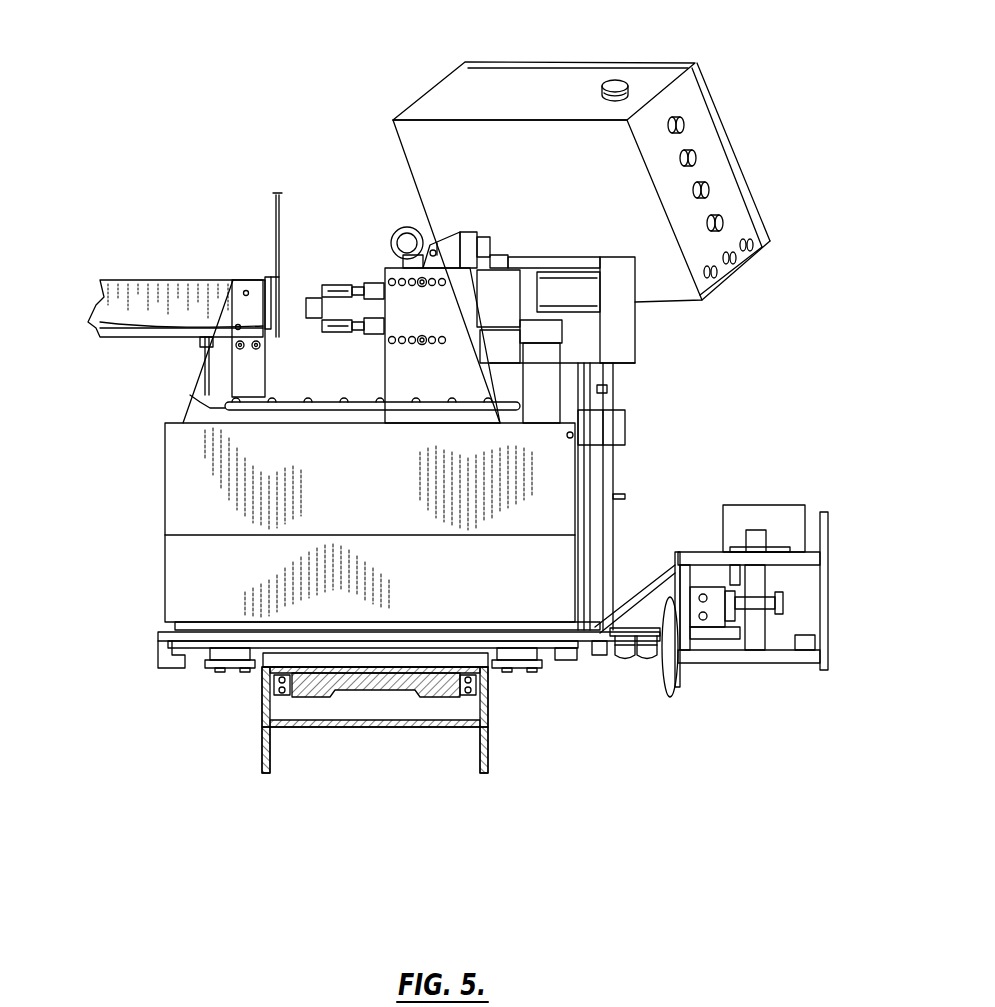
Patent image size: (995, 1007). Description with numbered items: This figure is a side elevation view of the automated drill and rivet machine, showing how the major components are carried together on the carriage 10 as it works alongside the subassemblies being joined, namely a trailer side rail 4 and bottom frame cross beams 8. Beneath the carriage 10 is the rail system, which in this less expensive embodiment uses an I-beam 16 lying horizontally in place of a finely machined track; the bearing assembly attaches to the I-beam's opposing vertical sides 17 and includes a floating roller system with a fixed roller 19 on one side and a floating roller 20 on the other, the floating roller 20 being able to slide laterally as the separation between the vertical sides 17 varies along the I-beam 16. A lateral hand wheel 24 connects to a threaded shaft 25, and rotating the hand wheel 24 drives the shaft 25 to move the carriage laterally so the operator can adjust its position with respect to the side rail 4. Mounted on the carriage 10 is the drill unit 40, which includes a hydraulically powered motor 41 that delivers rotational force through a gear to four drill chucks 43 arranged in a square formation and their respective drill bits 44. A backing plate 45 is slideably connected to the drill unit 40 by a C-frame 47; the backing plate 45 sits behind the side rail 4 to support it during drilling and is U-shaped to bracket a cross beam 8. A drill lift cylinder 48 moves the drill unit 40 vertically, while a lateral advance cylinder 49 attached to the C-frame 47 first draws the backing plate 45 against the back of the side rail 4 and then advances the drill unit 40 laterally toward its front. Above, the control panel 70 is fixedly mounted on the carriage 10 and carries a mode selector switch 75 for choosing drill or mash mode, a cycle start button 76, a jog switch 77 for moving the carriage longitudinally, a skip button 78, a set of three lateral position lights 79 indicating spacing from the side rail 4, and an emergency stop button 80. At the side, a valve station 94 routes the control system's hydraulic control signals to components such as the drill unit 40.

The trailer side rail 4 is at (268, 327).
The bottom frame cross beams 8 is at (125, 282).
The carriage 10 is at (128, 573).
The I-beam 16 is at (398, 730).
The opposing vertical sides 17 is at (266, 737).
The fixed roller 19 is at (273, 687).
The floating roller 20 is at (478, 687).
The lateral hand wheel 24 is at (672, 697).
The threaded shaft 25 is at (592, 656).
The drill unit 40 is at (406, 282).
The motor 41 is at (574, 302).
The drill chucks 43 is at (378, 266).
The drill bits 44 is at (342, 266).
The backing plate 45 is at (270, 288).
The C-frame 47 is at (292, 400).
The drill lift cylinder 48 is at (545, 383).
The lateral advance cylinder 49 is at (618, 438).
The control panel 70 is at (474, 93).
The mode selector switch 75 is at (688, 120).
The cycle start button 76 is at (698, 152).
The jog switch 77 is at (712, 185).
The skip button 78 is at (724, 222).
The lateral position lights 79 is at (730, 263).
The emergency stop button 80 is at (624, 78).
The valve station 94 is at (848, 585).